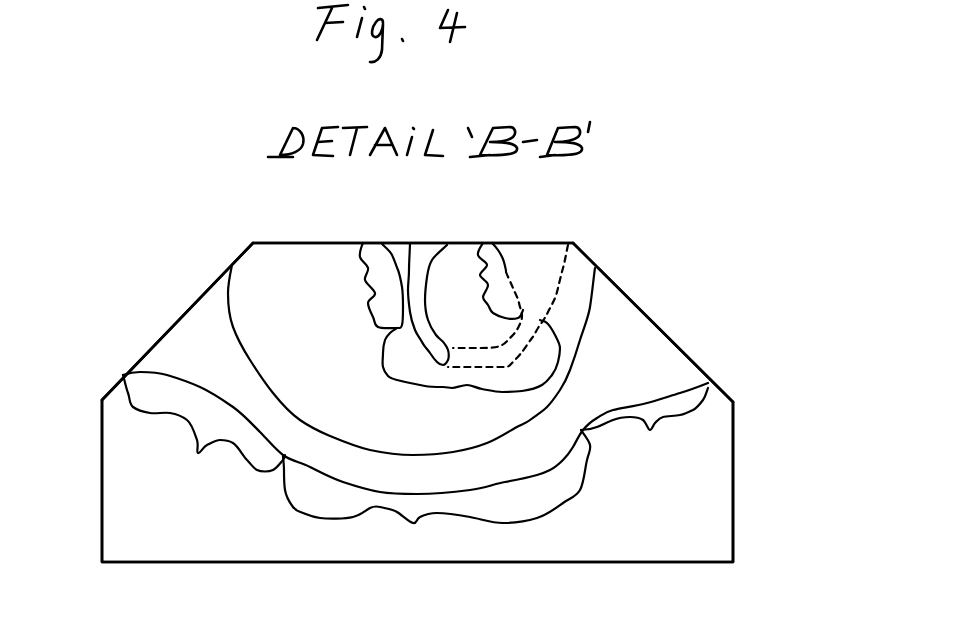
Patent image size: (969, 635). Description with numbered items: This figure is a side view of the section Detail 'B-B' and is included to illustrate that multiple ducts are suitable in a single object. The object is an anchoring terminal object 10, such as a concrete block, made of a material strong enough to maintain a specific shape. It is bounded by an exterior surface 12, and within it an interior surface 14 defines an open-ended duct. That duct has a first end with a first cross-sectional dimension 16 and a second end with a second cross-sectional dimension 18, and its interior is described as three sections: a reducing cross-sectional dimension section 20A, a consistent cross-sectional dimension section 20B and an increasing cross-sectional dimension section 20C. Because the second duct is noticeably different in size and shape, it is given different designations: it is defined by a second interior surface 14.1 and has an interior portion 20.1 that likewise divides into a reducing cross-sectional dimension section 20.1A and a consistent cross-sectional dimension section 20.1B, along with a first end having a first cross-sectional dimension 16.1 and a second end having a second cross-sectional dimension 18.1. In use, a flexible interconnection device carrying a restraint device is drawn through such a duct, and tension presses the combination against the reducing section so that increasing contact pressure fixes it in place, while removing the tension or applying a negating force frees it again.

The anchoring terminal object 10 is at (668, 511).
The exterior surface 12 is at (283, 234).
The interior surface 14 is at (187, 372).
The second interior surface 14.1 is at (516, 266).
The first cross-sectional dimension 16 is at (644, 308).
The first cross-sectional dimension of second duct 16.1 is at (558, 240).
The second cross-sectional dimension 18 is at (214, 281).
The second cross-sectional dimension of second duct 18.1 is at (414, 233).
The interior portion of second duct 20.1 is at (411, 360).
The reducing cross-sectional dimension section 20.1A is at (482, 283).
The consistent cross-sectional dimension section 20.1B is at (450, 388).
The reducing cross-sectional dimension section 20A is at (644, 433).
The consistent cross-sectional dimension section 20B is at (436, 497).
The increasing cross-sectional dimension section 20C is at (204, 433).